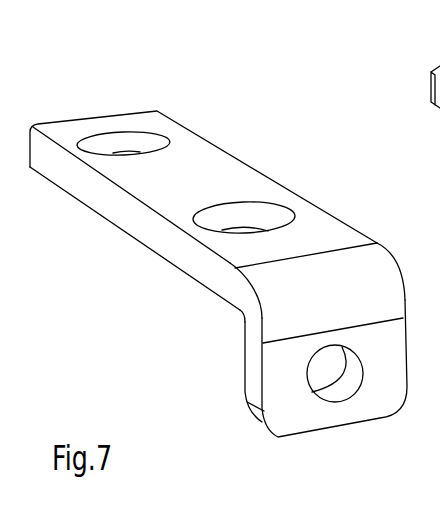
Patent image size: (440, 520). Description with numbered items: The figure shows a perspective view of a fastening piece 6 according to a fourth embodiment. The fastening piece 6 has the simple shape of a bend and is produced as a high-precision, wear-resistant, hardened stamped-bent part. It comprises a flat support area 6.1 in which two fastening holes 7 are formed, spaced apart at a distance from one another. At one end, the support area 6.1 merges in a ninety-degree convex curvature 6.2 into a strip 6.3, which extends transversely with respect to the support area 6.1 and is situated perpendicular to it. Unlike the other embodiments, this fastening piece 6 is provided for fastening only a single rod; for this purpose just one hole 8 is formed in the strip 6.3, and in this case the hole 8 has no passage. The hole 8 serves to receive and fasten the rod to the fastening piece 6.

The fastening piece 6 is at (231, 117).
The support area 6.1 is at (167, 197).
The convex curvature 6.2 is at (273, 302).
The strip 6.3 is at (273, 383).
The fastening holes 7 is at (120, 140).
The hole 8 is at (333, 383).